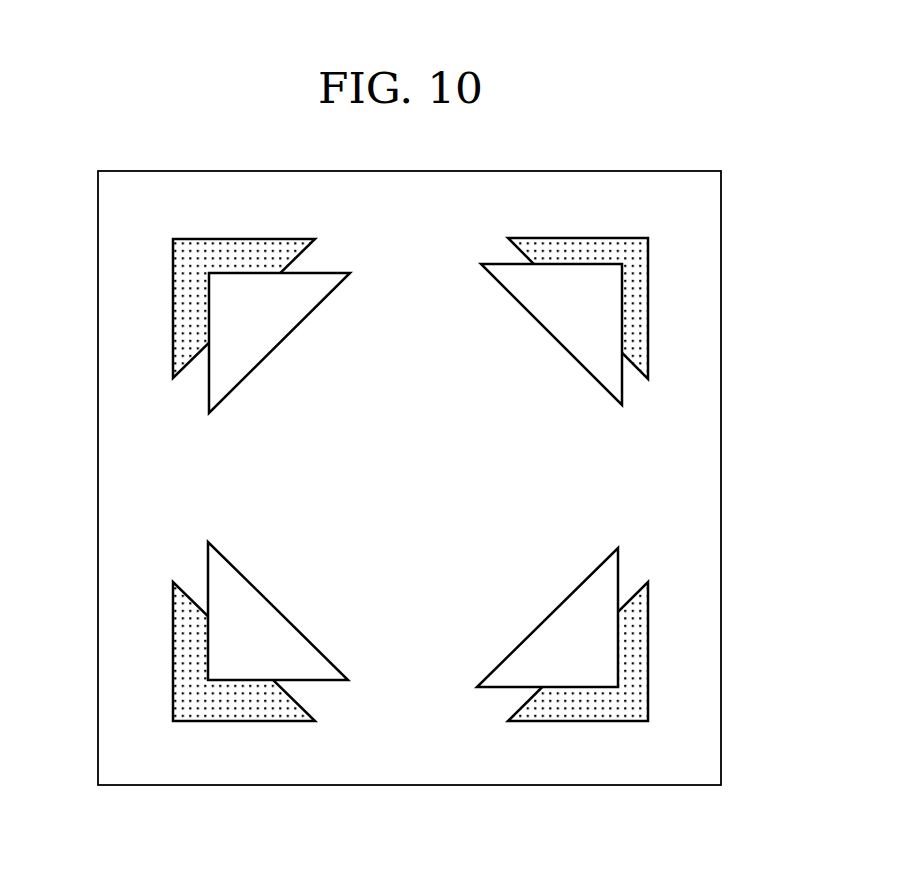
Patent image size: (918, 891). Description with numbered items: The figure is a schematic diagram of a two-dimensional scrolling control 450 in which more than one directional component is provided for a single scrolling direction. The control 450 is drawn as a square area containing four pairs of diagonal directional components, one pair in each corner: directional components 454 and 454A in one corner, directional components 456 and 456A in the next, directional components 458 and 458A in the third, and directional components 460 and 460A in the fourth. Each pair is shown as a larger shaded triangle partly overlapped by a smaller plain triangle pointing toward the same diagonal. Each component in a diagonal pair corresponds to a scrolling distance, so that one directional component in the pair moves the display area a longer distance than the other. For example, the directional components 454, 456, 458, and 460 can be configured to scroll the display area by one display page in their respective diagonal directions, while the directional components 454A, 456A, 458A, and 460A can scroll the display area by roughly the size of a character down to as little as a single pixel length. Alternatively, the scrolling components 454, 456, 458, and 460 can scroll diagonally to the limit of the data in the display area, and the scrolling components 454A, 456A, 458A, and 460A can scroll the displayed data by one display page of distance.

The two-dimensional scrolling control 450 is at (663, 133).
The diagonal directional component 454 is at (633, 309).
The diagonal directional component 454A is at (527, 313).
The diagonal directional component 456 is at (620, 665).
The diagonal directional component 456A is at (532, 628).
The diagonal directional component 458 is at (237, 697).
The diagonal directional component 458A is at (303, 635).
The diagonal directional component 460 is at (195, 290).
The diagonal directional component 460A is at (273, 352).